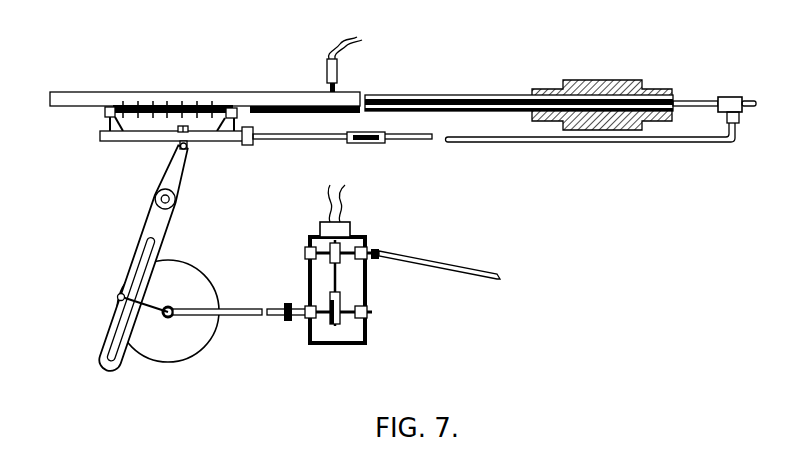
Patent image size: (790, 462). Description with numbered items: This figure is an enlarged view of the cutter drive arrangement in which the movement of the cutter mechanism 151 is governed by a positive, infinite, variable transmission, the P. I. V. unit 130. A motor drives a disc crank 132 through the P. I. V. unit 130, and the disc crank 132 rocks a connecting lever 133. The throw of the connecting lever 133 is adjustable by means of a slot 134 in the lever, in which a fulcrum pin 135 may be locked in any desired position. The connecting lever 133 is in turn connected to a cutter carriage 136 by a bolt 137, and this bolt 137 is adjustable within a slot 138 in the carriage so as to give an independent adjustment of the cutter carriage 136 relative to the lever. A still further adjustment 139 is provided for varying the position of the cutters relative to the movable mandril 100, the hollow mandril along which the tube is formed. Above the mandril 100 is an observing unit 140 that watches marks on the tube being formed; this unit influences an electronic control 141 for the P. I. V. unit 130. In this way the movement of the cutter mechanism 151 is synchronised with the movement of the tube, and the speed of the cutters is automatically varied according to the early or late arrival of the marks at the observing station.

The movable mandril 100 is at (195, 98).
The cutter mechanism 151 is at (148, 105).
The observing unit 140 is at (327, 68).
The cutter carriage 136 is at (112, 138).
The adjustment 139 is at (364, 143).
The slot 138 is at (163, 137).
The bolt 137 is at (188, 149).
The connecting lever 133 is at (153, 222).
The slot 134 is at (108, 366).
The fulcrum pin 135 is at (118, 297).
The disc crank 132 is at (198, 312).
The electronic control 141 is at (338, 228).
The P. I. V. unit 130 is at (347, 282).